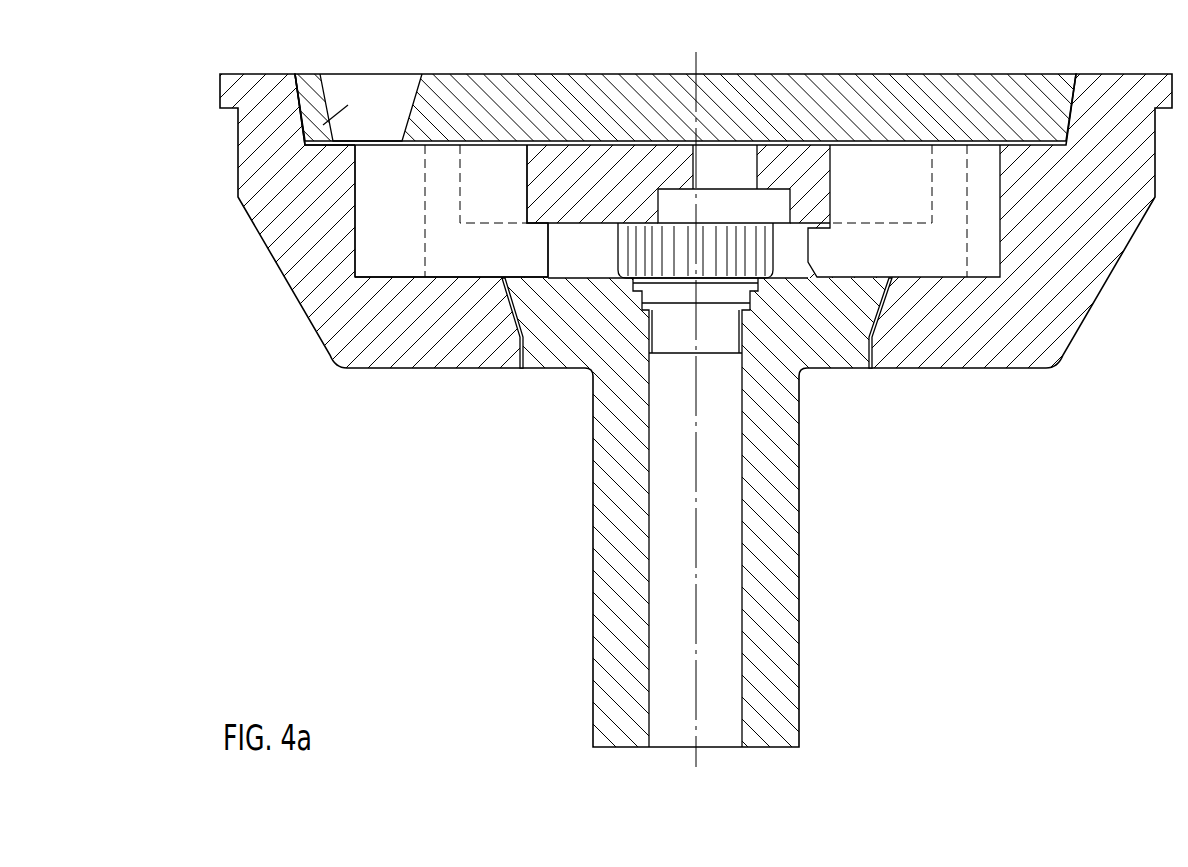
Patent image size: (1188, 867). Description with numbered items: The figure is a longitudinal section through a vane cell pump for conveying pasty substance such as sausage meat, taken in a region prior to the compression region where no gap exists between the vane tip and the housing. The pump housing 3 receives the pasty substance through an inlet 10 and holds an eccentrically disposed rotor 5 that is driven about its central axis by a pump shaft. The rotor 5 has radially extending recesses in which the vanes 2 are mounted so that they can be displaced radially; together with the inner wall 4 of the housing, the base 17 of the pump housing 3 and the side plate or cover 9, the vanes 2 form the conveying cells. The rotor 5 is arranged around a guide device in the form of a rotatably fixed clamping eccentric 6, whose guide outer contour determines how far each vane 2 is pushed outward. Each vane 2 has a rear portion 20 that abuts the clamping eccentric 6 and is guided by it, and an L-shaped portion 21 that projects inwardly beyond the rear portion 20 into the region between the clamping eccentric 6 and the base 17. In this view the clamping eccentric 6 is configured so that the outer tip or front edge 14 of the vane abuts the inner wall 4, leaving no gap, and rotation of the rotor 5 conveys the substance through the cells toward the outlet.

The vane 2 is at (397, 255).
The pump housing 3 is at (1108, 245).
The inner wall 4 is at (352, 165).
The rotor 5 is at (438, 184).
The clamping eccentric 6 is at (593, 217).
The cover 9 is at (1015, 80).
The inlet 10 is at (295, 130).
The front edge of the vane 14 is at (352, 248).
The base 17 is at (530, 277).
The rear portion 20 is at (528, 193).
The L-shaped portion 21 is at (538, 267).